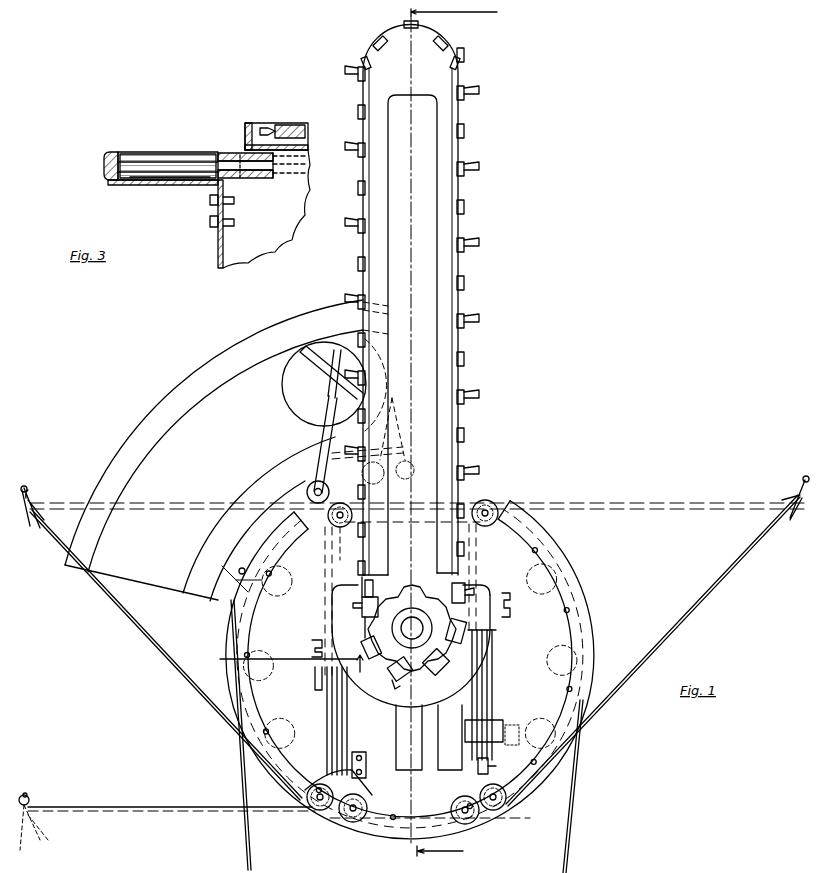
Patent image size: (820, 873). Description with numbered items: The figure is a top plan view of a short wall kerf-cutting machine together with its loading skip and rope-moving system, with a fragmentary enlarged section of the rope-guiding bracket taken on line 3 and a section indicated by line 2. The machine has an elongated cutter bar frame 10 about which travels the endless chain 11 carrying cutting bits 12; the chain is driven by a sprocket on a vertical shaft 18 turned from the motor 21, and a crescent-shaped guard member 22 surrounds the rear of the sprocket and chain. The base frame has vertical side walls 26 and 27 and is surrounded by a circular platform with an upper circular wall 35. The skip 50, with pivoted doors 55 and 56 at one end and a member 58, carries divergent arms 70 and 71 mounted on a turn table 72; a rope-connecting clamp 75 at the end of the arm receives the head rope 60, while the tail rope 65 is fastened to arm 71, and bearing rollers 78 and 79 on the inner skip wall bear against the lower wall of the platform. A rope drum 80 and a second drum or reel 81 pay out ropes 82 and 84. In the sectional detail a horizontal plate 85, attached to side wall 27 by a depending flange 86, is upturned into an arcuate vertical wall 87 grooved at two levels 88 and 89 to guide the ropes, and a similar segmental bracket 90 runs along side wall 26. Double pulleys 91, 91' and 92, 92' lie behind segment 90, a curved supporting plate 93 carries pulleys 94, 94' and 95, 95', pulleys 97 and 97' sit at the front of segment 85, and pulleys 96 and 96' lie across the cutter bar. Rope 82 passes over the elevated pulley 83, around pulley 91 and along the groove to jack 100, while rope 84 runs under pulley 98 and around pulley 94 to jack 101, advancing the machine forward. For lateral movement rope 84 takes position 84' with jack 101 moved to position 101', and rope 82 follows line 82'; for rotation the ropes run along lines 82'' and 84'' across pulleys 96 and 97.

In FIG. 1, the section line 2- 2 is at (447, 437).
In FIG. 1, the section line 3— 3 is at (295, 666).
In FIG. 1, the cutter bar frame 10 is at (446, 58).
In FIG. 1, the endless chain 11 is at (460, 105).
In FIG. 1, the cutting bits 12 is at (465, 140).
In FIG. 1, the vertical shaft 18 is at (270, 867).
In FIG. 1, the motor 21 is at (429, 744).
In FIG. 3, the crescent-shaped guard member 22 is at (250, 122).
In FIG. 1, the vertical side wall 26 is at (495, 668).
In FIG. 3, the vertical side wall 27 is at (218, 247).
In FIG. 1, the vertical side wall 27 is at (325, 600).
In FIG. 1, the circular wall 35 is at (402, 838).
In FIG. 1, the skip 50 is at (205, 374).
In FIG. 1, the pivoted door 55 is at (402, 420).
In FIG. 1, the pivoted door 56 is at (358, 305).
In FIG. 1, the guard inner wall 58 is at (238, 480).
In FIG. 1, the head rope 60 is at (588, 776).
In FIG. 1, the tail rope 65 is at (230, 778).
In FIG. 1, the divergent arm 70 is at (331, 374).
In FIG. 1, the divergent arm 71 is at (303, 418).
In FIG. 1, the turn table 72 is at (290, 388).
In FIG. 1, the rope-connecting clamp 75 is at (416, 479).
In FIG. 1, the bearing roller 78 is at (235, 592).
In FIG. 1, the bearing roller 79 is at (362, 471).
In FIG. 1, the rope drum 80 is at (490, 694).
In FIG. 1, the drum or reel 81 is at (350, 742).
In FIG. 1, the rope 82 is at (415, 650).
In FIG. 1, the line 82' is at (417, 491).
In FIG. 1, the line 82" 82'' is at (417, 522).
In FIG. 1, the elevated pulley 83 is at (491, 759).
In FIG. 1, the rope 84 is at (98, 629).
In FIG. 1, the position 84' is at (279, 825).
In FIG. 1, the line 84" 84'' is at (686, 515).
In FIG. 3, the horizontal plate 85 is at (163, 188).
In FIG. 1, the horizontal plate 85 is at (245, 724).
In FIG. 3, the depending flange 86 is at (210, 201).
In FIG. 3, the arcuate vertical wall 87 is at (185, 152).
In FIG. 3, the upper guide groove 88 is at (108, 178).
In FIG. 3, the lower guide groove 89 is at (104, 160).
In FIG. 1, the segmental grooved rope-guiding bracket 90 is at (560, 612).
In FIG. 1, the double pulley 91 is at (506, 808).
In FIG. 1, the double pulley 91' is at (525, 838).
In FIG. 1, the double pulley 92 is at (475, 824).
In FIG. 1, the double pulley 92' is at (492, 857).
In FIG. 1, the curved supporting plate 93 is at (337, 822).
In FIG. 1, the double pulley 94 is at (307, 806).
In FIG. 1, the double pulley 94' is at (292, 833).
In FIG. 1, the double pulley 95 is at (370, 806).
In FIG. 1, the double pulley 95' is at (395, 811).
In FIG. 1, the pulley 96 is at (496, 494).
In FIG. 1, the pulley 96' is at (513, 482).
In FIG. 3, the grooved pulley 97 is at (242, 151).
In FIG. 1, the grooved pulley 97 is at (342, 525).
In FIG. 3, the grooved pulley 97' is at (271, 177).
In FIG. 1, the grooved pulley 97' is at (348, 544).
In FIG. 1, the pulley 98 is at (340, 762).
In FIG. 1, the jack 100 is at (793, 494).
In FIG. 1, the jack 101 is at (50, 492).
In FIG. 1, the jack position 101' is at (46, 810).